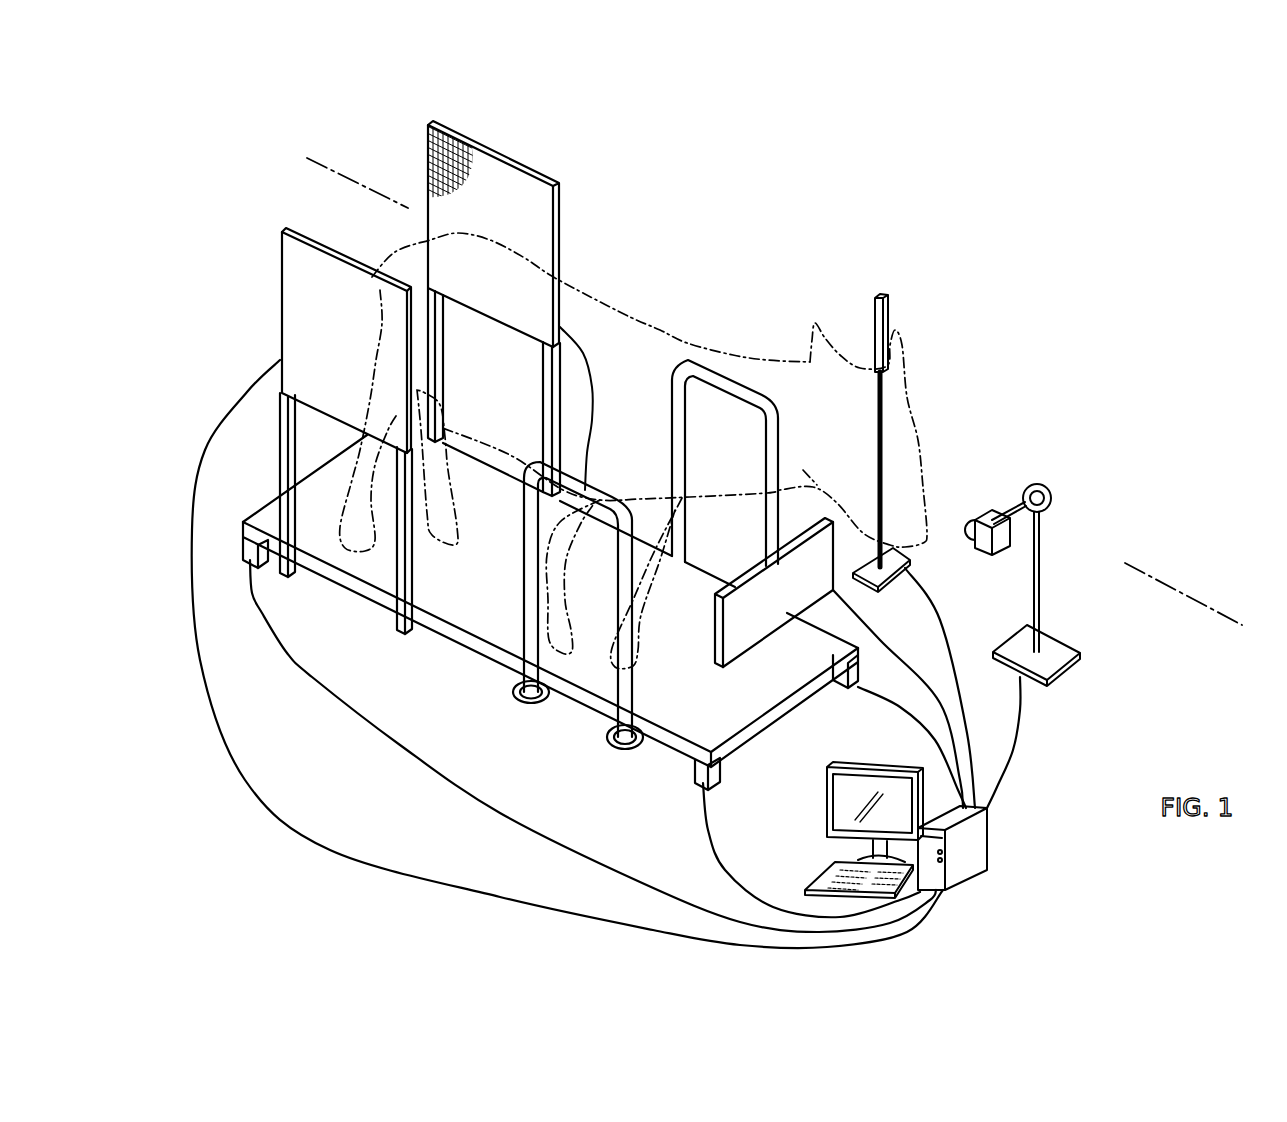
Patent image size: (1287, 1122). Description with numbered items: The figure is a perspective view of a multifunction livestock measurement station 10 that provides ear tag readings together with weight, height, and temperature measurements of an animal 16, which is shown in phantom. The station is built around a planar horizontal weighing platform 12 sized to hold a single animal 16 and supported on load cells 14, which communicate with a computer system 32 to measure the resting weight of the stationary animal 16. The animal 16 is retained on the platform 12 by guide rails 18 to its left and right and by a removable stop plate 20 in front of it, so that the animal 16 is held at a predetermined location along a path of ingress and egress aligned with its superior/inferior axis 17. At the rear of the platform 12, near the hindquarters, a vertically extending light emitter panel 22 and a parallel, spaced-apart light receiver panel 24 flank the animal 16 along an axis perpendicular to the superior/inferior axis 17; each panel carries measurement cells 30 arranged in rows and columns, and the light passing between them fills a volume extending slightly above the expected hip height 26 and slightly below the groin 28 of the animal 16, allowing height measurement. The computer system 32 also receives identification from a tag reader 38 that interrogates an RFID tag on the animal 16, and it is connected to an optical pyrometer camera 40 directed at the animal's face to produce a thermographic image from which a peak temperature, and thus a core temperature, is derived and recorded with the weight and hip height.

The multifunction livestock measurement station 10 is at (733, 213).
The weighing platform 12 is at (470, 607).
The load cells 14 is at (246, 540).
The animal 16 is at (625, 347).
The superior/inferior axis 17 is at (1172, 585).
The guide rails 18 is at (718, 370).
The stop plate 20 is at (747, 625).
The light emitter panel 22 is at (300, 303).
The light receiver panel 24 is at (432, 123).
The hip height 26 is at (343, 178).
The groin 28 is at (458, 475).
The measurement cells 30 is at (312, 238).
The computer system 32 is at (975, 838).
The tag reader 38 is at (890, 313).
The optical pyrometer camera 40 is at (990, 512).